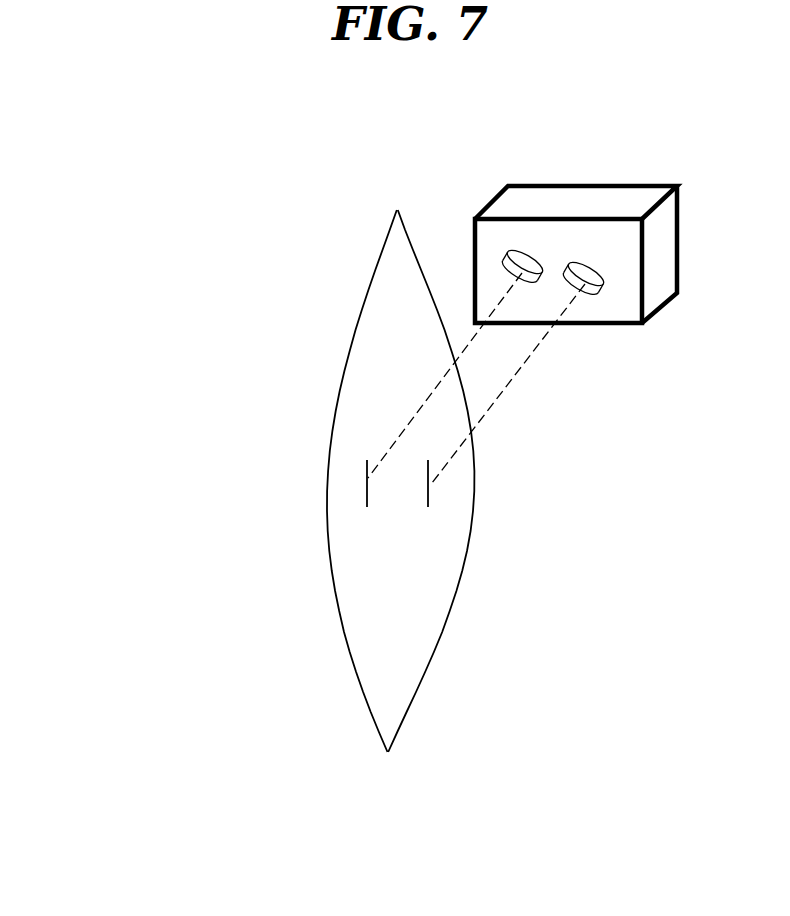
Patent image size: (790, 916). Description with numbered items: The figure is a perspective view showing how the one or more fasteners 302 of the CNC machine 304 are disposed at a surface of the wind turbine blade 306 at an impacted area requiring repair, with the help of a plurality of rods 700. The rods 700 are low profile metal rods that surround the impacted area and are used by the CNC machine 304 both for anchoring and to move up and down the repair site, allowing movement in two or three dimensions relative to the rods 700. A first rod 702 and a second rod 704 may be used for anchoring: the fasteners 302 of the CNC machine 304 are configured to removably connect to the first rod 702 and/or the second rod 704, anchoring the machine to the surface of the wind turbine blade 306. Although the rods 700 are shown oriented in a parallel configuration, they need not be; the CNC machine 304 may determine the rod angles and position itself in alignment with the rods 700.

The fasteners 302 is at (600, 290).
The CNC machine 304 is at (537, 183).
The wind turbine blade 306 is at (355, 340).
The plurality of rods 700 is at (336, 429).
The first rod 702 is at (367, 493).
The second rod 704 is at (428, 493).